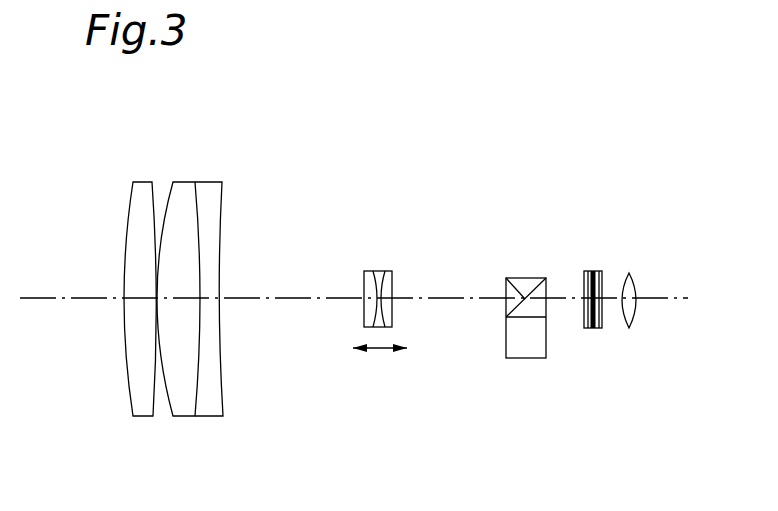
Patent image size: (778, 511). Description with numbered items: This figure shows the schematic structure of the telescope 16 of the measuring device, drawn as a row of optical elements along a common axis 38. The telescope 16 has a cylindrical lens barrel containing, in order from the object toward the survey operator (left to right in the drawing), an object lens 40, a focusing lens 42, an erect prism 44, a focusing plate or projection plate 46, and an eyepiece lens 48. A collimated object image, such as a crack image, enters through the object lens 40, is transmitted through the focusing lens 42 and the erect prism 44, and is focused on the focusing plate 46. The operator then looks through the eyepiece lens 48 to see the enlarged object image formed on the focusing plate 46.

The telescope 16 is at (426, 125).
The optical axis 38 is at (73, 297).
The object lens 40 is at (237, 437).
The focusing lens 42 is at (383, 271).
The erect prism 44 is at (525, 358).
The focusing plate 46 is at (590, 328).
The eyepiece lens 48 is at (628, 273).